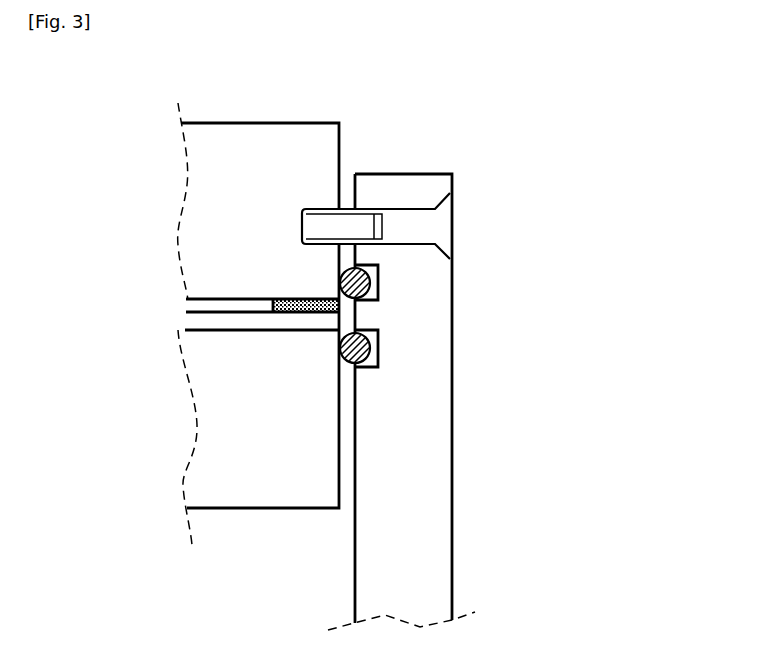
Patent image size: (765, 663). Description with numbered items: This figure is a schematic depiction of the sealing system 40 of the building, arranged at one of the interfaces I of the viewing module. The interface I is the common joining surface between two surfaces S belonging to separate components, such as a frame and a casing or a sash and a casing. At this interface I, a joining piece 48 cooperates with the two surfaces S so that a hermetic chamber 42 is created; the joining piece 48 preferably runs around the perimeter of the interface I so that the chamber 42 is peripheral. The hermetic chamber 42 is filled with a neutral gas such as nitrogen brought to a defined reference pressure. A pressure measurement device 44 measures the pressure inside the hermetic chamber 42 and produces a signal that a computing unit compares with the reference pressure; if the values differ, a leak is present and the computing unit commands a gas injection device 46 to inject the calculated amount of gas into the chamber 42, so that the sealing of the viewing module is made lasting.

The sealing system 40 is at (158, 366).
The hermetic chamber 42 is at (343, 321).
The pressure measurement device 44 is at (292, 298).
The gas injection device 46 is at (193, 321).
The joining piece 48 is at (382, 272).
The interface I is at (347, 186).
The surface S is at (346, 498).